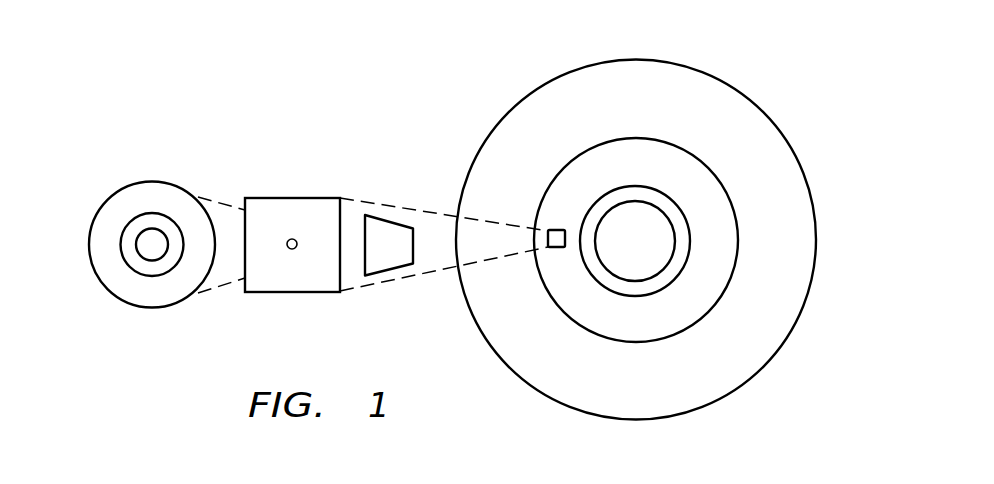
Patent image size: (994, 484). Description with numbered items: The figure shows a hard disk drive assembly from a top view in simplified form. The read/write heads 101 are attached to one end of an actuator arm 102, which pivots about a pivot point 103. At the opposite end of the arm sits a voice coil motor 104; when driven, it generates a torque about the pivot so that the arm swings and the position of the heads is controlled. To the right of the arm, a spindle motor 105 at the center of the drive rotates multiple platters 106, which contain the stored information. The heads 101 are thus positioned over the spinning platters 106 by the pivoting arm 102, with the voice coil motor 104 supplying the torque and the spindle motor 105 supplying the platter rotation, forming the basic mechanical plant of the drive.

The read/write heads 101 is at (553, 230).
The actuator arm 102 is at (388, 273).
The pivot point 103 is at (292, 239).
The voice coil motor 104 is at (143, 223).
The spindle motor 105 is at (635, 192).
The platters 106 is at (768, 87).